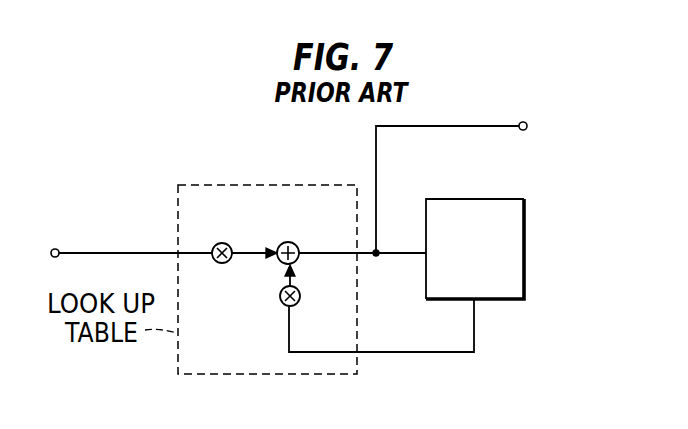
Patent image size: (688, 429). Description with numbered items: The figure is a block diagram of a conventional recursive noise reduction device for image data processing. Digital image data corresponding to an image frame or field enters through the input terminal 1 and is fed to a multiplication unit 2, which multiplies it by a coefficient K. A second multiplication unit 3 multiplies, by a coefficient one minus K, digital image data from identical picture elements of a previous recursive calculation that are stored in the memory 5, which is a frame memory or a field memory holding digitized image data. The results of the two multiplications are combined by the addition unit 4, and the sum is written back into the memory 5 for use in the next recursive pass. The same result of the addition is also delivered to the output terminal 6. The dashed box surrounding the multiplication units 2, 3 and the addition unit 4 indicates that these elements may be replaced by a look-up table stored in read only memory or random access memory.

The input terminal 1 is at (56, 248).
The multiplication unit 2 is at (224, 242).
The multiplication unit 3 is at (300, 296).
The addition unit 4 is at (290, 241).
The memory 5 is at (489, 199).
The output terminal 6 is at (522, 121).